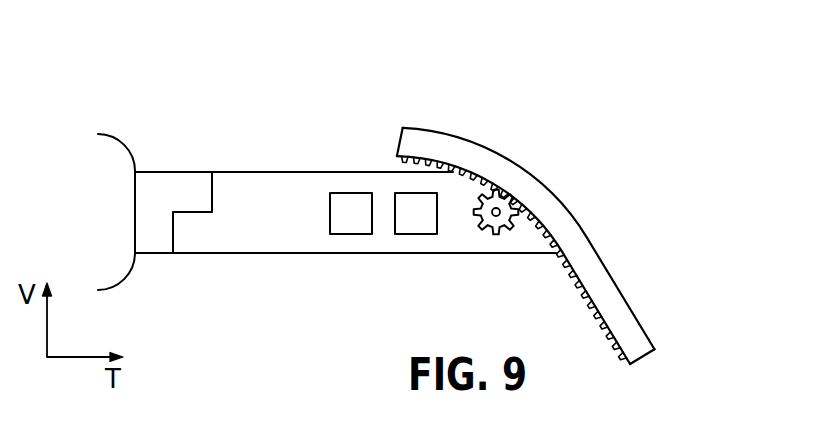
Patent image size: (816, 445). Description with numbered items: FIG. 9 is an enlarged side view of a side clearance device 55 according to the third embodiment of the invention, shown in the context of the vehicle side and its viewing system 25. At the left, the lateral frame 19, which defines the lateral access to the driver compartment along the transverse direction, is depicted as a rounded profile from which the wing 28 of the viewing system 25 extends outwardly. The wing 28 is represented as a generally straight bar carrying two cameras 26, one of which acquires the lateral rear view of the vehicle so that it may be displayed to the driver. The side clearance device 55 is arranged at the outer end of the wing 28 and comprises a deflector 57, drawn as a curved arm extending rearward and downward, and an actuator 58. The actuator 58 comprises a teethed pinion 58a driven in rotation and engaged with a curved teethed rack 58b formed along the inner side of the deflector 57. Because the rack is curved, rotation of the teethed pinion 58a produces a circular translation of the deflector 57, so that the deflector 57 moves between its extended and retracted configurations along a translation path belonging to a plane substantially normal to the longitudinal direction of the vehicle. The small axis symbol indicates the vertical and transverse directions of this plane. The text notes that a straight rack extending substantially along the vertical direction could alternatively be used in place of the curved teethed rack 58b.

The lateral frame 19 is at (118, 132).
The viewing system 25 is at (297, 282).
The cameras 26 is at (352, 234).
The wing 28 is at (268, 170).
The side clearance device 55 is at (562, 118).
The deflector 57 is at (602, 268).
The actuator 58 is at (522, 230).
The teethed pinion 58a is at (498, 200).
The curved teethed rack 58b is at (555, 232).